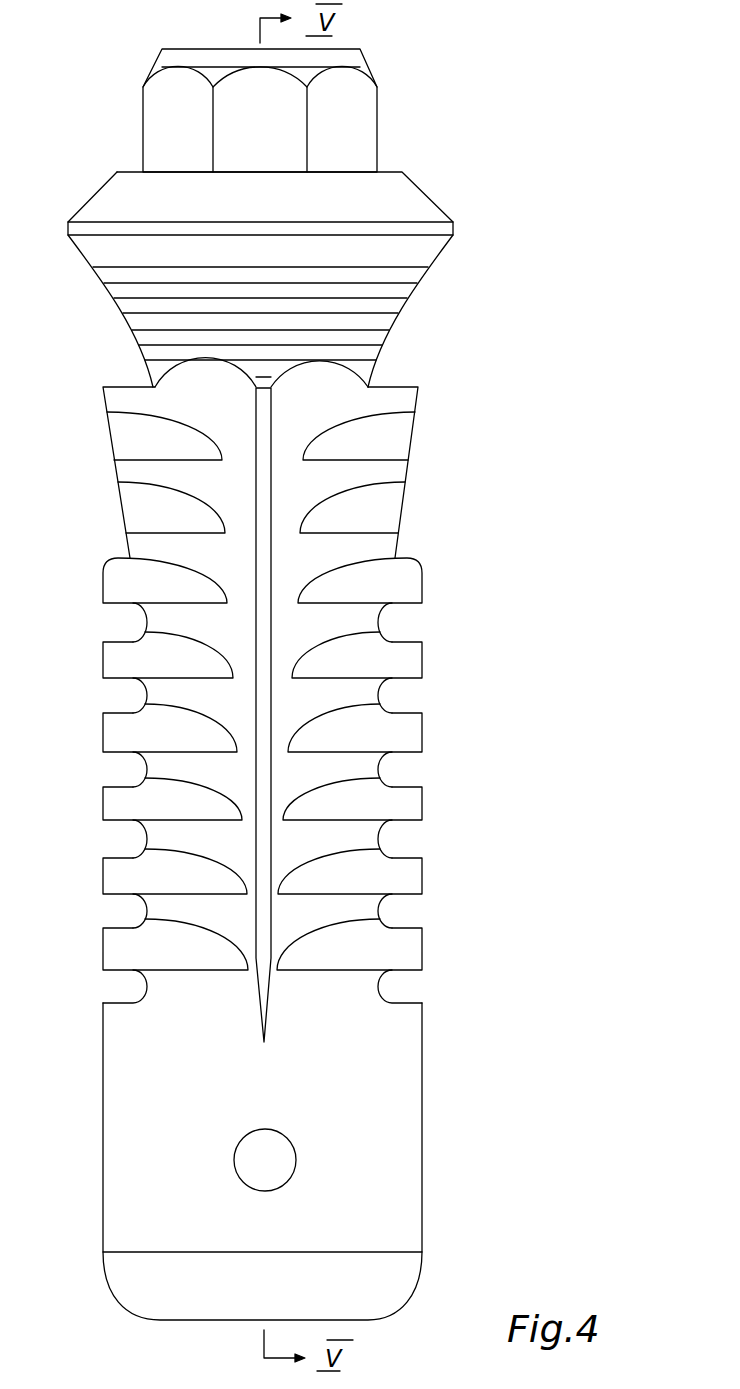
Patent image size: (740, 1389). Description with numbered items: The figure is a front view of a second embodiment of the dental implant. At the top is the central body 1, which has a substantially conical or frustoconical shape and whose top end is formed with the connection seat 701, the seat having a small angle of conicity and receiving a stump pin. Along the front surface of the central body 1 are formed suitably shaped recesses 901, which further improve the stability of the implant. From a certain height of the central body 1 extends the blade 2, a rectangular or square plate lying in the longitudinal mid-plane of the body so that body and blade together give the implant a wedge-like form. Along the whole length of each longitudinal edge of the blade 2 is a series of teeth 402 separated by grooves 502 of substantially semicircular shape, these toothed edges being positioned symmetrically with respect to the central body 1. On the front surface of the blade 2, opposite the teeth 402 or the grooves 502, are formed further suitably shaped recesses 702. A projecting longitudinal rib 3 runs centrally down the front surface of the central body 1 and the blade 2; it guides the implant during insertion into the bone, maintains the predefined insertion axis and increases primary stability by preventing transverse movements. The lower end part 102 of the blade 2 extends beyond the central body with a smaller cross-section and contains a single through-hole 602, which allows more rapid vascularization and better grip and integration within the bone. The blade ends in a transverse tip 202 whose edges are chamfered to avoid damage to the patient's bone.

The connection seat 701 is at (378, 118).
The central body 1 is at (413, 469).
The blade 2 is at (426, 733).
The longitudinal rib 3 is at (258, 411).
The recess 901 is at (123, 425).
The recess 702 is at (170, 578).
The tooth 402 is at (103, 582).
The groove 502 is at (133, 623).
The end part 102 is at (405, 1098).
The through-hole 602 is at (290, 1168).
The transverse tip 202 is at (410, 1267).